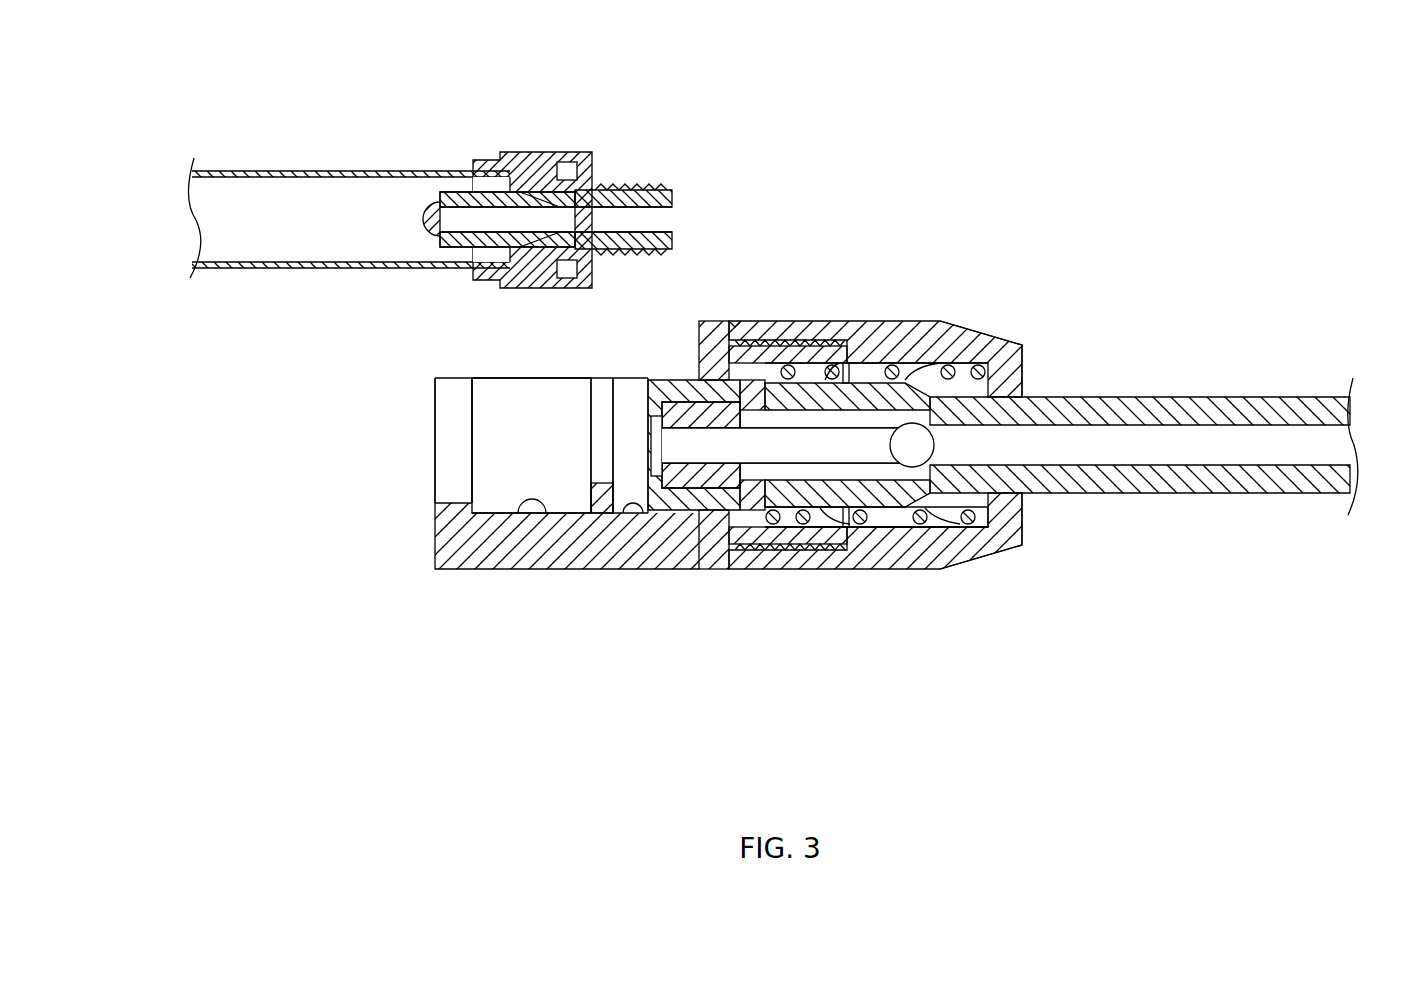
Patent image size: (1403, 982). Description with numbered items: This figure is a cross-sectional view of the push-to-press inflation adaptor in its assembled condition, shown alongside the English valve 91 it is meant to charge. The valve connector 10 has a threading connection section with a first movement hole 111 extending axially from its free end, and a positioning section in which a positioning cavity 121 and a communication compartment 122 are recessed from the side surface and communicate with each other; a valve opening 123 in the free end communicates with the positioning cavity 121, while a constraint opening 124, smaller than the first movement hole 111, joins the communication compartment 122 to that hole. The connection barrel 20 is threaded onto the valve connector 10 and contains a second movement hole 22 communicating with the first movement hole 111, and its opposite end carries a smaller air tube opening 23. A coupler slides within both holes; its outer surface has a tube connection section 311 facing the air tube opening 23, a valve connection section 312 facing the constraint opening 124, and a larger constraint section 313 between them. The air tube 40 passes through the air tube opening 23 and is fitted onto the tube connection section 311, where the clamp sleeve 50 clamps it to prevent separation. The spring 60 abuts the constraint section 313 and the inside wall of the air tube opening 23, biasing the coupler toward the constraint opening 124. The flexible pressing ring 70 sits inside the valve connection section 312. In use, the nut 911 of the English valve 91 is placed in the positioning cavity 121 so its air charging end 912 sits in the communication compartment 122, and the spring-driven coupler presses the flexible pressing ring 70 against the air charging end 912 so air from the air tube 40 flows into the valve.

The valve connector 10 is at (570, 548).
The first movement hole 111 is at (828, 521).
The positioning cavity 121 is at (518, 514).
The communication compartment 122 is at (622, 514).
The valve opening 123 is at (457, 503).
The constraint opening 124 is at (713, 382).
The connection barrel 20 is at (880, 332).
The second movement hole 22 is at (937, 520).
The air tube opening 23 is at (1020, 352).
The tube connection section 311 is at (912, 456).
The valve connection section 312 is at (690, 502).
The constraint section 313 is at (752, 360).
The air tube 40 is at (1217, 482).
The clamp sleeve 50 is at (862, 378).
The spring 60 is at (858, 520).
The flexible pressing ring 70 is at (683, 408).
The English valve 91 is at (345, 170).
The nut 911 is at (530, 154).
The air charging end 912 is at (638, 188).